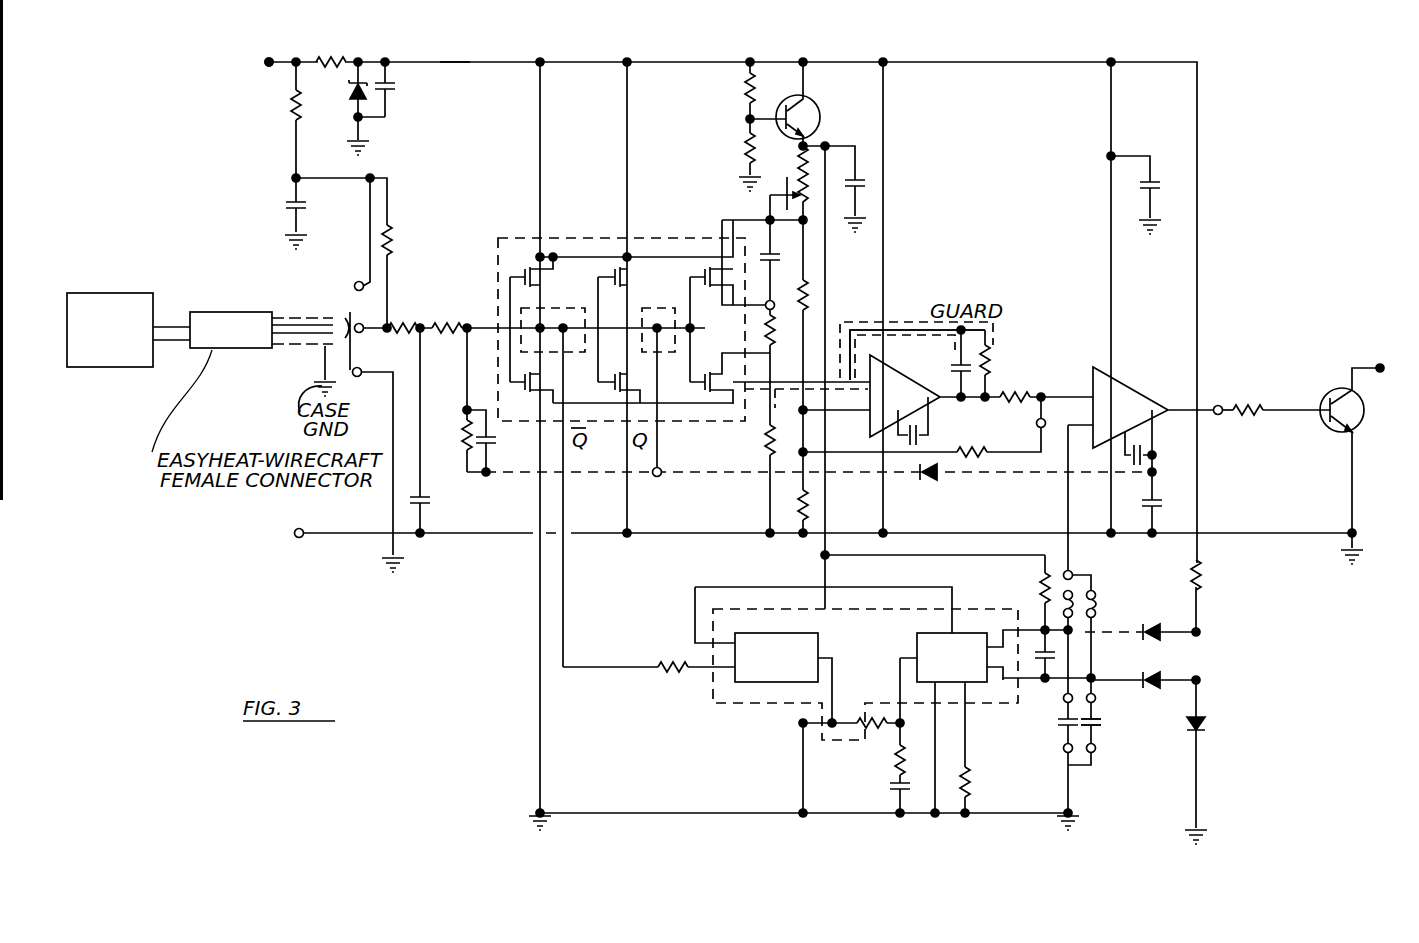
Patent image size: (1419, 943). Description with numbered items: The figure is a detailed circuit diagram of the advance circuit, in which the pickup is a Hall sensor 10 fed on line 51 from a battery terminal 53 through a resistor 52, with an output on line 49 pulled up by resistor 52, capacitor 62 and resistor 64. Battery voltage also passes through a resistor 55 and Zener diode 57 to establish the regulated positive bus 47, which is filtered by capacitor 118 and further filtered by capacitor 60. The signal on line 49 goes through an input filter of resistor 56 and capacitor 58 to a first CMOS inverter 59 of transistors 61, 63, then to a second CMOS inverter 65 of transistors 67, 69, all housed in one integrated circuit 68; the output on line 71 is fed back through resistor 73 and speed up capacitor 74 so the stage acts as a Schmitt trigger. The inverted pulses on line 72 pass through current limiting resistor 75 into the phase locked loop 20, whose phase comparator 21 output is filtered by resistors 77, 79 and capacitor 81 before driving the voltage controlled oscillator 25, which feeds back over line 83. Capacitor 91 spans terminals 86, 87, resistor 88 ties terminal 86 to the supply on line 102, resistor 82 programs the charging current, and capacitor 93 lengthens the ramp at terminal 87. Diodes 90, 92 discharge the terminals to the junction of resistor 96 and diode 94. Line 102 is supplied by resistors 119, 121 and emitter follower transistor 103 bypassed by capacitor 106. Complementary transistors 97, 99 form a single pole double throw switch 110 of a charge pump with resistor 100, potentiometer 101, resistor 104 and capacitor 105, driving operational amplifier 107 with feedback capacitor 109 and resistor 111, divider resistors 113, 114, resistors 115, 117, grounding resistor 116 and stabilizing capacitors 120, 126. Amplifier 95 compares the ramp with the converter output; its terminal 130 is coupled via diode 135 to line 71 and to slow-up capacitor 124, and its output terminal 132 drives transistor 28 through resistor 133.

The Hall sensor 10 is at (130, 293).
The phase locked loop 20 is at (768, 608).
The phase comparator 21 is at (752, 685).
The voltage controlled oscillator 25 is at (915, 640).
The transistor 28 is at (1326, 395).
The positive bus 47 is at (457, 60).
The output line 49 is at (360, 334).
The input line 51 is at (300, 312).
The resistor 52 is at (292, 108).
The battery terminal 53 is at (268, 60).
The resistor 55 is at (332, 58).
The resistor 56 is at (404, 322).
The Zener diode 57 is at (352, 106).
The capacitor 58 is at (430, 500).
The first CMOS inverter 59 is at (550, 308).
The capacitor 60 is at (396, 88).
The transistor 61 is at (527, 266).
The capacitor 62 is at (294, 203).
The transistor 63 is at (525, 397).
The resistor 64 is at (395, 232).
The second CMOS inverter 65 is at (646, 308).
The transistor 67 is at (618, 268).
The integrated circuit 68 is at (558, 238).
The transistor 69 is at (609, 387).
The output line 71 is at (609, 477).
The line 72 is at (567, 622).
The resistor 73 is at (463, 440).
The speed up capacitor 74 is at (496, 440).
The current limiting resistor 75 is at (670, 662).
The resistor 77 is at (873, 733).
The resistor 79 is at (908, 760).
The capacitor 81 is at (890, 786).
The resistor 82 is at (975, 782).
The line 83 is at (902, 590).
The terminal 86 is at (1005, 630).
The terminal 87 is at (1000, 690).
The resistor 88 is at (1040, 590).
The diode 90 is at (1142, 631).
The capacitor 91 is at (1055, 655).
The diode 92 is at (1145, 688).
The capacitor 93 is at (1097, 730).
The diode 94 is at (1205, 722).
The operational amplifier 95 is at (1130, 385).
The resistor 96 is at (1205, 580).
The transistor 97 is at (733, 255).
The transistor 99 is at (718, 372).
The resistor 100 is at (808, 170).
The potentiometer 101 is at (806, 218).
The line 102 is at (825, 285).
The emitter follower transistor 103 is at (812, 103).
The resistor 104 is at (778, 338).
The capacitor 105 is at (785, 260).
The bypass capacitor 106 is at (862, 178).
The operational amplifier 107 is at (940, 400).
The capacitor 109 is at (970, 362).
The single pole double throw switch 110 is at (683, 368).
The resistor 111 is at (993, 375).
The resistor 113 is at (812, 505).
The resistor 114 is at (805, 313).
The output resistor 115 is at (1010, 392).
The resistor 116 is at (764, 452).
The resistor 117 is at (980, 457).
The capacitor 118 is at (1152, 180).
The resistor 119 is at (745, 92).
The capacitor 120 is at (922, 436).
The resistor 121 is at (745, 150).
The slow-up capacitor 124 is at (1162, 503).
The capacitor 126 is at (1160, 472).
The terminal 130 is at (1148, 453).
The terminal 132 is at (1222, 405).
The resistor 133 is at (1250, 418).
The diode 135 is at (935, 478).